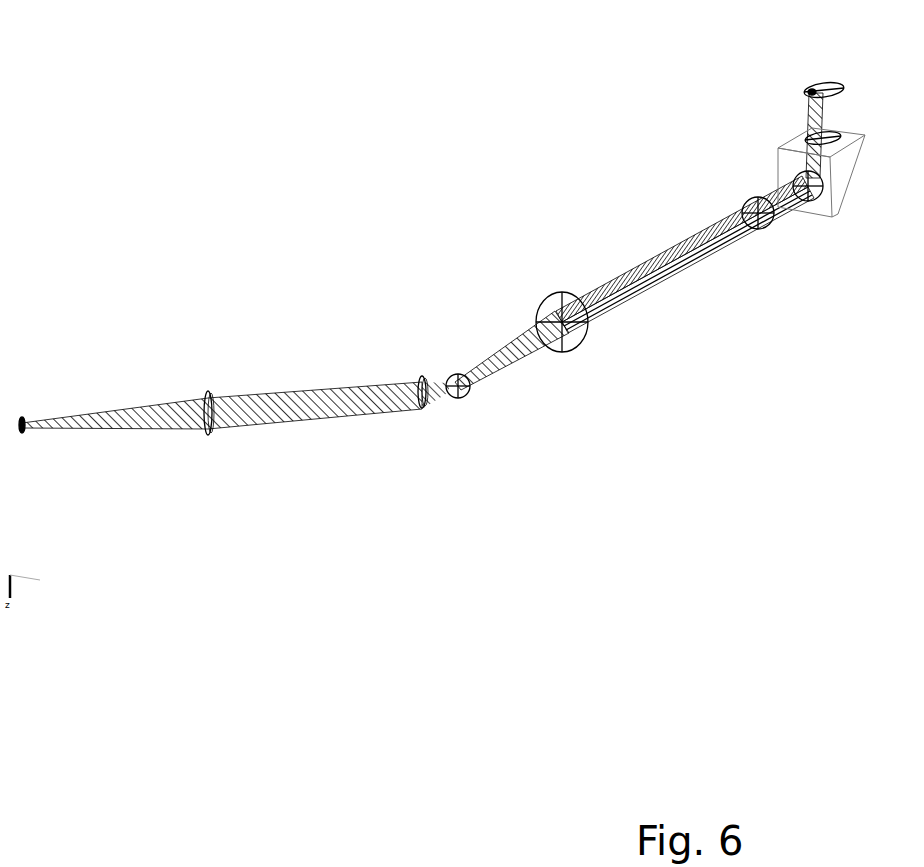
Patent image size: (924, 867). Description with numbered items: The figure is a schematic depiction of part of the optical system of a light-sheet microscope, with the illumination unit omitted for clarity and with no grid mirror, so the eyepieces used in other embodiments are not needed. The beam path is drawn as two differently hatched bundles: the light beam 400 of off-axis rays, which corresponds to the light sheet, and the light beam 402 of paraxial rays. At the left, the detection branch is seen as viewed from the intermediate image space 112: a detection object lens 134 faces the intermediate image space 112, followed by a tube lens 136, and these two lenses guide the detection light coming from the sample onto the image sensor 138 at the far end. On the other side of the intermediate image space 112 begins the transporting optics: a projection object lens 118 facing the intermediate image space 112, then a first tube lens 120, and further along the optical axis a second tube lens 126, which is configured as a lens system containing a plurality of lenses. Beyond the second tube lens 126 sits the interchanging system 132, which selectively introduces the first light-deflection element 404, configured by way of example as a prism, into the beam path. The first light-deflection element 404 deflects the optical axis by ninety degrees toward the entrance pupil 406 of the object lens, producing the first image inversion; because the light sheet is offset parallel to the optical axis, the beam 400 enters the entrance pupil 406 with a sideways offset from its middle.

The intermediate image space 112 is at (468, 408).
The projection object lens 118 is at (450, 378).
The first tube lens 120 is at (556, 300).
The second tube lens 126 is at (762, 231).
The interchanging system 132 is at (770, 150).
The detection object lens 134 is at (427, 402).
The tube lens 136 is at (210, 432).
The image sensor 138 is at (27, 430).
The light beam of off-axis rays 400 is at (610, 323).
The light beam of paraxial rays 402 is at (716, 227).
The first light-deflection element 404 is at (805, 211).
The entrance pupil 406 is at (810, 88).